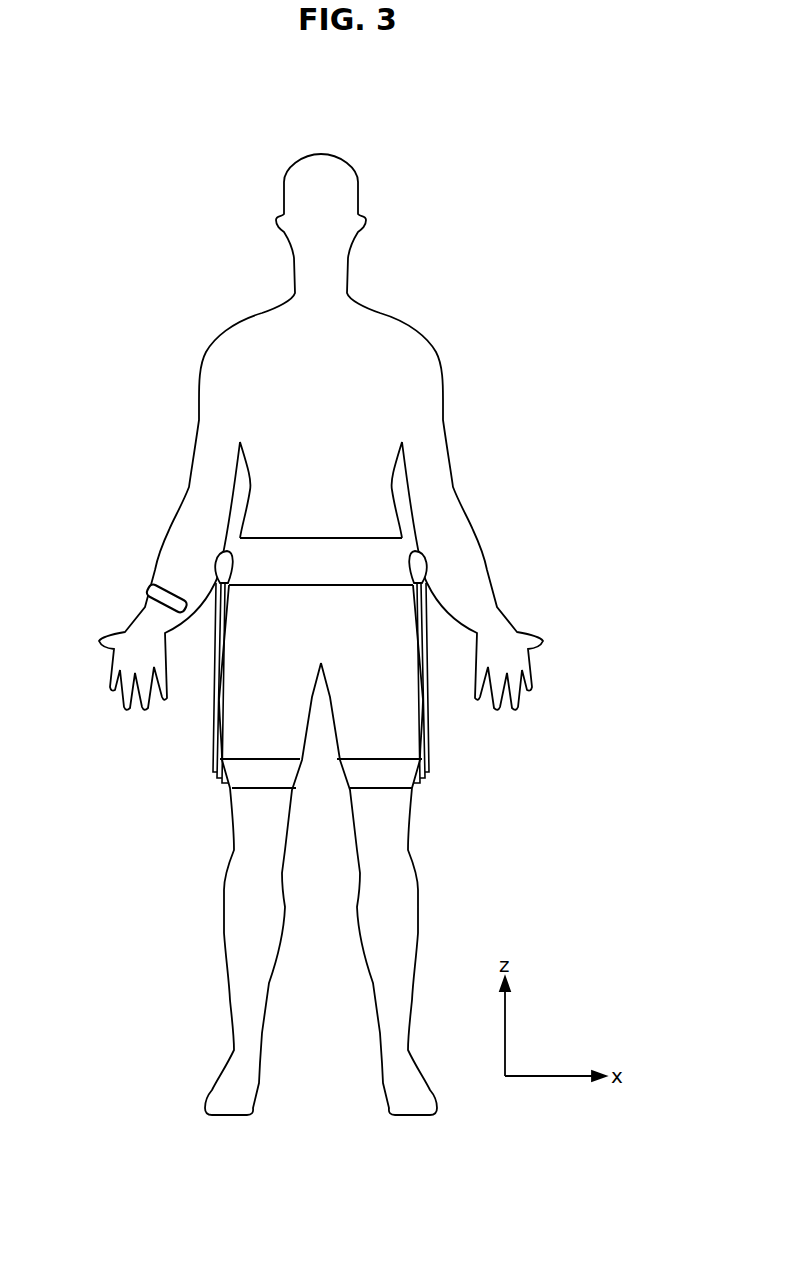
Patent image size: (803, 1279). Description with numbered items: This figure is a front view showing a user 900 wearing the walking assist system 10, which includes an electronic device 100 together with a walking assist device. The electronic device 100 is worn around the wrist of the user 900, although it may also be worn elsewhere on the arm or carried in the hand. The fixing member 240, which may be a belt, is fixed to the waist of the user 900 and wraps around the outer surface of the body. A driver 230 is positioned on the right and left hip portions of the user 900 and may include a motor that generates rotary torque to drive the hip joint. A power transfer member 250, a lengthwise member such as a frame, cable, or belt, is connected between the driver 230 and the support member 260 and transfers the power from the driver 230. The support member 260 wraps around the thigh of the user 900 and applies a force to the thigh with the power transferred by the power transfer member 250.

The walking assist system 10 is at (335, 107).
The electronic device 100 is at (148, 587).
The user 900 is at (393, 317).
The fixing member 240 is at (367, 545).
The driver 230 is at (423, 563).
The power transfer member 250 is at (427, 633).
The support member 260 is at (385, 783).